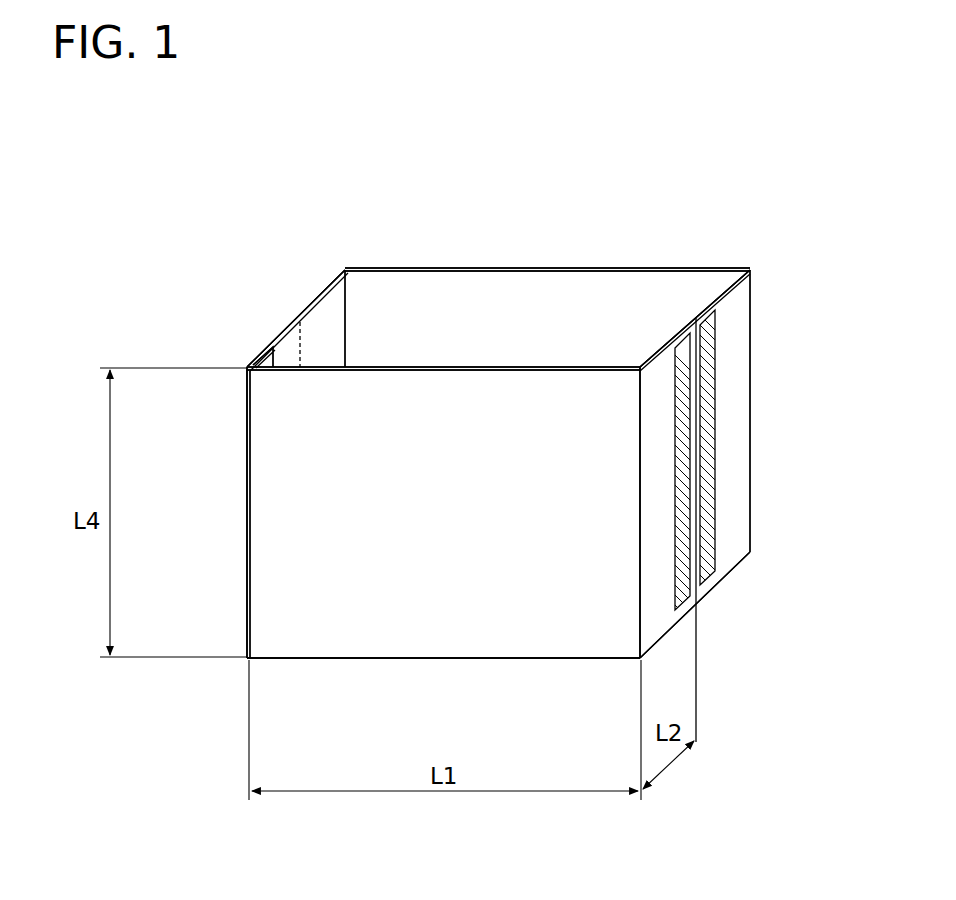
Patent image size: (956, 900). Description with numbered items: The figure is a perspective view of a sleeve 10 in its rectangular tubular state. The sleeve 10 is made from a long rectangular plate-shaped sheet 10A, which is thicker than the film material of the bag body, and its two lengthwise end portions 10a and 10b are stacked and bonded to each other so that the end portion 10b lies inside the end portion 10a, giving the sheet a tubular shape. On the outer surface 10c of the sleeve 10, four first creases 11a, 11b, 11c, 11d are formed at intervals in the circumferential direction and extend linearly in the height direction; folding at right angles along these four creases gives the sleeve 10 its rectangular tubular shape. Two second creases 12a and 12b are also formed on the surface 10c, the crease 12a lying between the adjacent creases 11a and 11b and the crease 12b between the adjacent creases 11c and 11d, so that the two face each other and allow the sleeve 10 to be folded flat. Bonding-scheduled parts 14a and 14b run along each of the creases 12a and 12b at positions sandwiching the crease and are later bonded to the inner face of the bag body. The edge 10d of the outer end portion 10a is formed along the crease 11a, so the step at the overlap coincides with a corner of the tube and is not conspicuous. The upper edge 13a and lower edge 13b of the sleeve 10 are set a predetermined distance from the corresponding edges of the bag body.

The sleeve 10 is at (640, 196).
The plate-shaped sheet 10A is at (493, 267).
The end portion 10a is at (250, 366).
The end portion 10b is at (268, 362).
The outer surface 10c is at (388, 614).
The edge 10d is at (246, 480).
The crease 11a is at (245, 395).
The crease 11b is at (345, 268).
The crease 11c is at (742, 357).
The crease 11d is at (640, 452).
The crease 12a is at (300, 335).
The crease 12b is at (698, 445).
The upper edge 13a is at (527, 366).
The lower edge 13b is at (508, 660).
The bonding-scheduled part 14a is at (712, 565).
The bonding-scheduled part 14b is at (712, 330).